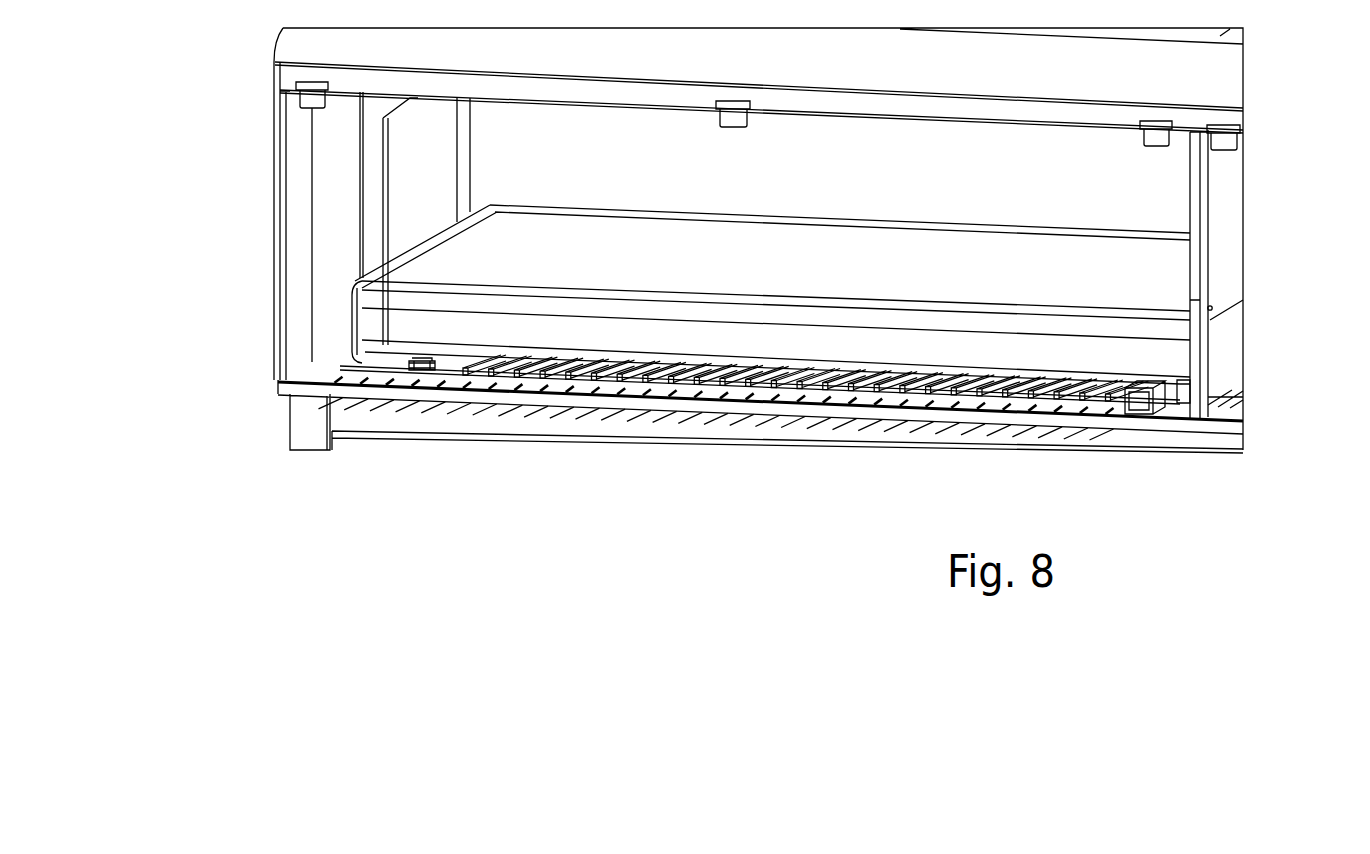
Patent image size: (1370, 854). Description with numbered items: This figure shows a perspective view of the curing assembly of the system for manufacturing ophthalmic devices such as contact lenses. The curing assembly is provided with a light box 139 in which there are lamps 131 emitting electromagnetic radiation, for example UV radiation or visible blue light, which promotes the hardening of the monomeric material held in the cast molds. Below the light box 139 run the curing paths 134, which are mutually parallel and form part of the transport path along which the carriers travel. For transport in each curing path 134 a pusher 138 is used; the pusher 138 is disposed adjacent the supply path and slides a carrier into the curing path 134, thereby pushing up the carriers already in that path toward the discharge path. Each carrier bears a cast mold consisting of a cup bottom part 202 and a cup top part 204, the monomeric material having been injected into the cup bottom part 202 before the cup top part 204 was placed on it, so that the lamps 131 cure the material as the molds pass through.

The light box 139 is at (678, 250).
The lamps 131 is at (577, 353).
The curing paths 134 is at (330, 406).
The cup bottom part 202 is at (410, 360).
The cup top part 204 is at (296, 319).
The pusher 138 is at (1147, 400).